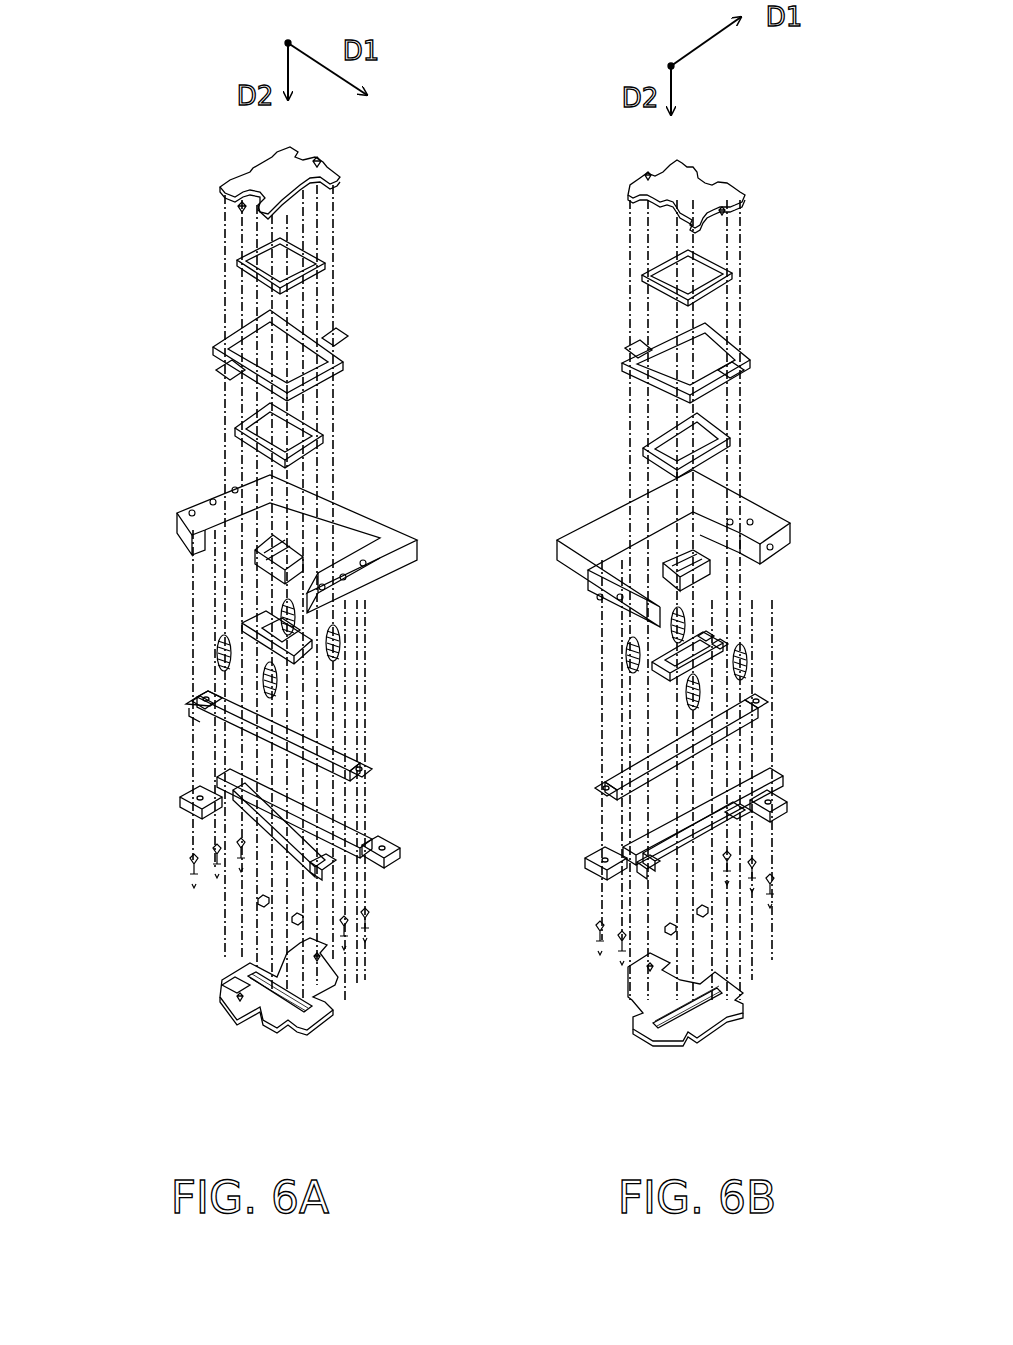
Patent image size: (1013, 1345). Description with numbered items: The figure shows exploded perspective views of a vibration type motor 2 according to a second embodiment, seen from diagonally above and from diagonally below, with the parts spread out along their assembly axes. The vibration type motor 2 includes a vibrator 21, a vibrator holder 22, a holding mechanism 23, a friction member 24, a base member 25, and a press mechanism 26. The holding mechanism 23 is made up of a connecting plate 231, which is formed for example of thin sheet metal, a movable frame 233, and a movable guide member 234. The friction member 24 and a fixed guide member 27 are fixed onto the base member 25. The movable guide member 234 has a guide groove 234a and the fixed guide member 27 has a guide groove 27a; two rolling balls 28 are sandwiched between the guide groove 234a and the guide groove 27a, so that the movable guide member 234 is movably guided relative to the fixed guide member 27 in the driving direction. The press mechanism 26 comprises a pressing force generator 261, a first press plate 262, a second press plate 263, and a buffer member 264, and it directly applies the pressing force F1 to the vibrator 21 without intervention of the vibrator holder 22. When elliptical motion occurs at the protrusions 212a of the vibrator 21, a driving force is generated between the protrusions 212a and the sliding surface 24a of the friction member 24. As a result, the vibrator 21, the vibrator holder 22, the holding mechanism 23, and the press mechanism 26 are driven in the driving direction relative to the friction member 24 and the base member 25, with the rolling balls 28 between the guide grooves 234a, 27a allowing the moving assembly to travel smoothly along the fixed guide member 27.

In FIG. 6A, the vibration type motor 2 is at (581, 1065).
In FIG. 6A, the vibrator 21 is at (245, 628).
In FIG. 6B, the vibrator 21 is at (722, 628).
In FIG. 6B, the protrusions 212a is at (680, 668).
In FIG. 6A, the vibrator holder 22 is at (322, 422).
In FIG. 6B, the vibrator holder 22 is at (652, 432).
In FIG. 6A, the holding mechanism 23 is at (199, 221).
In FIG. 6A, the connecting plate 231 is at (322, 256).
In FIG. 6B, the connecting plate 231 is at (647, 260).
In FIG. 6A, the movable frame 233 is at (338, 344).
In FIG. 6B, the movable frame 233 is at (627, 350).
In FIG. 6A, the movable guide member 234 is at (340, 1013).
In FIG. 6B, the movable guide member 234 is at (627, 1007).
In FIG. 6A, the guide groove 234a is at (243, 977).
In FIG. 6A, the friction member 24 is at (358, 756).
In FIG. 6B, the friction member 24 is at (620, 762).
In FIG. 6A, the sliding surface 24a is at (226, 700).
In FIG. 6A, the base member 25 is at (335, 485).
In FIG. 6B, the base member 25 is at (625, 498).
In FIG. 6A, the press mechanism 26 is at (196, 141).
In FIG. 6A, the pressing force generator 261 is at (277, 680).
In FIG. 6B, the pressing force generator 261 is at (520, 650).
In FIG. 6A, the first press plate 262 is at (352, 170).
In FIG. 6B, the first press plate 262 is at (612, 163).
In FIG. 6A, the second press plate 263 is at (292, 546).
In FIG. 6B, the second press plate 263 is at (677, 558).
In FIG. 6A, the buffer member 264 is at (386, 539).
In FIG. 6B, the buffer member 264 is at (667, 563).
In FIG. 6A, the fixed guide member 27 is at (378, 840).
In FIG. 6B, the fixed guide member 27 is at (593, 855).
In FIG. 6B, the guide groove 27a is at (713, 820).
In FIG. 6A, the rolling balls 28 is at (303, 918).
In FIG. 6B, the rolling balls 28 is at (660, 928).
In FIG. 6A, the pressing force F1 is at (297, 588).
In FIG. 6B, the pressing force F1 is at (660, 607).